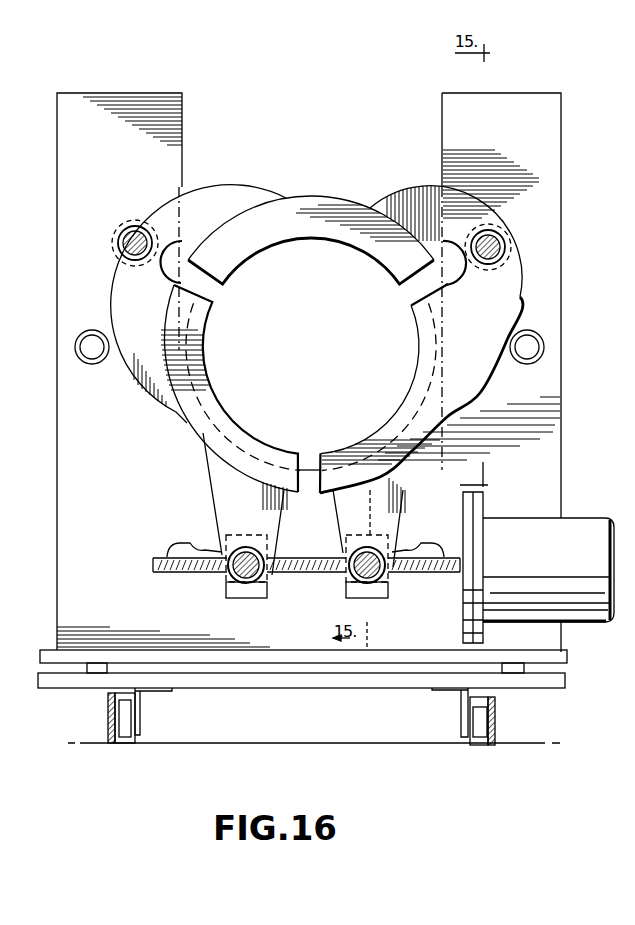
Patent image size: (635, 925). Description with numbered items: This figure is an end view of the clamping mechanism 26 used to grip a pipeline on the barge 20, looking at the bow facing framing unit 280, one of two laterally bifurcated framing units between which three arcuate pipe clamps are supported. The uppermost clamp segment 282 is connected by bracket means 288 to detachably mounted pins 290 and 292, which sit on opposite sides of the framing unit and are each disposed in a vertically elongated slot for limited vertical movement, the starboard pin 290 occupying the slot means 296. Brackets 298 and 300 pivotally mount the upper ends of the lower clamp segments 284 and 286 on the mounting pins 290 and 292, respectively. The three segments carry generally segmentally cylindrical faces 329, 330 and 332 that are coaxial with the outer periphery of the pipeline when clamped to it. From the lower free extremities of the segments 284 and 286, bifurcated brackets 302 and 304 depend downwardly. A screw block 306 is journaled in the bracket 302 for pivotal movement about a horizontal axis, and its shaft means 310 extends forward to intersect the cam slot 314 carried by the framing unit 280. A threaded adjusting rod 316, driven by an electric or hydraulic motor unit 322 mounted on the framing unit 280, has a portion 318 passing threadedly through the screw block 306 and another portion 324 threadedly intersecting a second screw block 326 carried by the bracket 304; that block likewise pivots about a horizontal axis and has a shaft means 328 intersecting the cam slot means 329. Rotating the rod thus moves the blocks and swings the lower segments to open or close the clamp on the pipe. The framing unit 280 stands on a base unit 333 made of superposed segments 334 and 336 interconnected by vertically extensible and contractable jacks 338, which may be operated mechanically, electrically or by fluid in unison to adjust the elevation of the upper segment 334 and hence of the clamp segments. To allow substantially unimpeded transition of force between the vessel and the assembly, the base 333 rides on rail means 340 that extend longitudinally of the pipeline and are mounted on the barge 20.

The barge 20 is at (375, 742).
The clamping mechanism 26 is at (228, 73).
The framing unit 280 is at (561, 128).
The uppermost clamp segment 282 is at (311, 208).
The clamp segment 284 is at (412, 396).
The clamp segment 286 is at (218, 402).
The bracket means 288 is at (419, 186).
The mounting pin 290 is at (505, 247).
The mounting pin 292 is at (128, 235).
The slot means 296 is at (503, 210).
The bracket 298 is at (505, 290).
The bracket 300 is at (115, 322).
The bifurcated bracket 302 is at (401, 487).
The bifurcated bracket 304 is at (207, 487).
The screw block 306 is at (389, 590).
The shaft means 310 is at (370, 551).
The cam slot 314 is at (426, 548).
The threaded adjusting rod 316 is at (310, 556).
The threaded portion 318 is at (323, 571).
The motor unit 322 is at (548, 556).
The threaded portion 324 is at (288, 575).
The screw block 326 is at (253, 598).
The shaft means 328 is at (236, 566).
The cam slot means / cylindrical face 329 is at (320, 243).
The cylindrical face 330 is at (381, 440).
The cylindrical face 332 is at (254, 440).
The base unit 333 is at (51, 636).
The upper base segment 334 is at (167, 655).
The lower base segment 336 is at (236, 686).
The jacks 338 is at (95, 670).
The rail means 340 is at (108, 724).